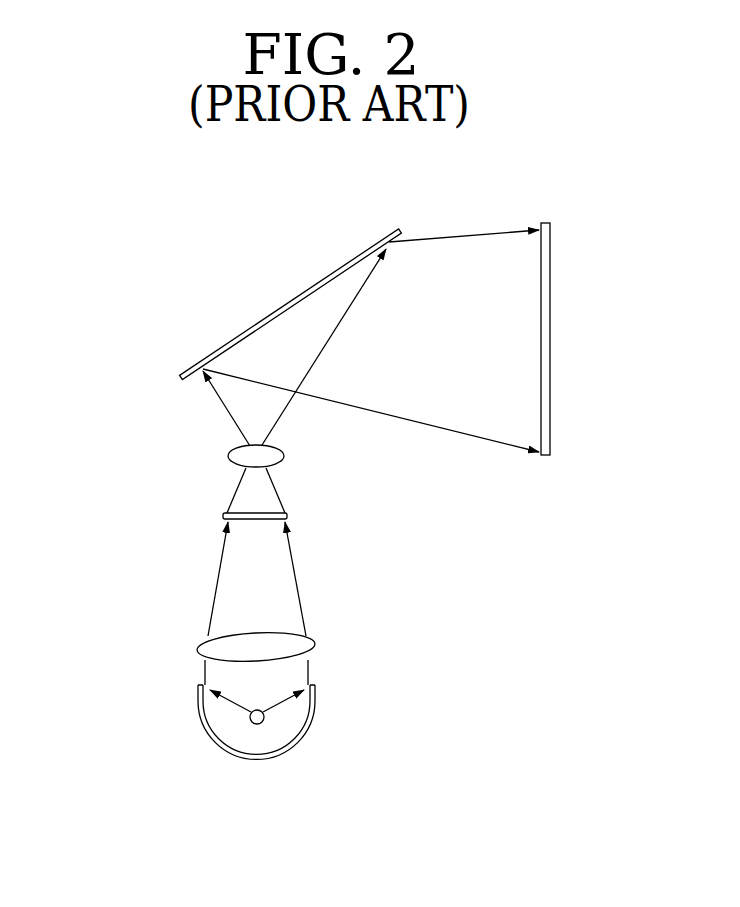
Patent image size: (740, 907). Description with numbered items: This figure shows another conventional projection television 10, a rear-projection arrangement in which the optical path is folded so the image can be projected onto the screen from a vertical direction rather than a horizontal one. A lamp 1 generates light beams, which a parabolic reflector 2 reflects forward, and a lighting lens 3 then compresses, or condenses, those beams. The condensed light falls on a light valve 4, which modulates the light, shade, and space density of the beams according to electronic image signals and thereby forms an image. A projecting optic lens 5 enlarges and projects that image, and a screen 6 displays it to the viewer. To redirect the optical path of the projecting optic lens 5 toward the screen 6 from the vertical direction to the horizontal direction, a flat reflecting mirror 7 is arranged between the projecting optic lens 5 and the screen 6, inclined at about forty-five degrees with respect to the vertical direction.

The lamp 1 is at (263, 725).
The reflector 2 is at (203, 725).
The condensing lens 3 is at (314, 644).
The display panel 4 is at (290, 516).
The projection lens 5 is at (231, 455).
The screen 6 is at (550, 352).
The reflecting mirror 7 is at (280, 309).
The projection display system 10 is at (161, 206).